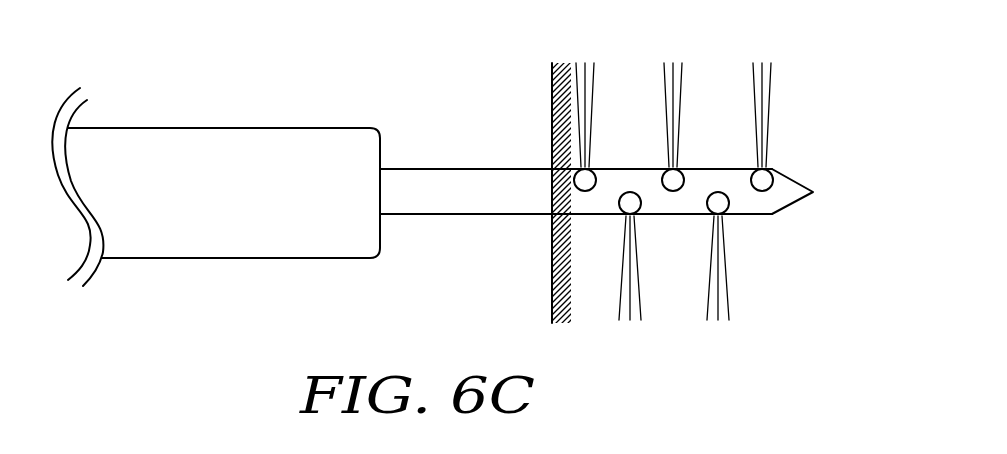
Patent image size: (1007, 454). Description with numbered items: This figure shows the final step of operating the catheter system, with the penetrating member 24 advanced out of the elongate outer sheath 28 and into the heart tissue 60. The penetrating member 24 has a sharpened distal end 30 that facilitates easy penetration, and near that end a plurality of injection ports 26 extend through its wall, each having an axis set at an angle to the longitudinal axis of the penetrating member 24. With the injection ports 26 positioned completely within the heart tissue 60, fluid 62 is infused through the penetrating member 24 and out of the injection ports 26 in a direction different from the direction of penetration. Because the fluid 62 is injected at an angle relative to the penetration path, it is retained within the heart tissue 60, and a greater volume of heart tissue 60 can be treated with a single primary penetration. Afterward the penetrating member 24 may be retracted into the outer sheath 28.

The penetrating member 24 is at (407, 215).
The injection ports 26 is at (764, 179).
The elongate outer sheath 28 is at (192, 258).
The sharpened distal end 30 is at (793, 206).
The heart tissue 60 is at (534, 86).
The fluid 62 is at (770, 56).